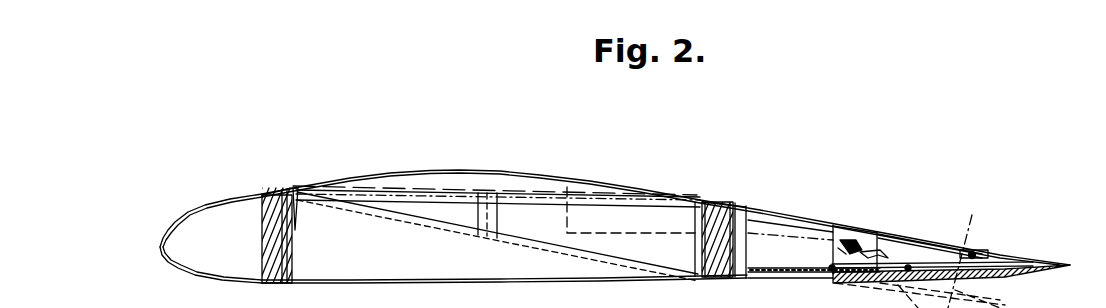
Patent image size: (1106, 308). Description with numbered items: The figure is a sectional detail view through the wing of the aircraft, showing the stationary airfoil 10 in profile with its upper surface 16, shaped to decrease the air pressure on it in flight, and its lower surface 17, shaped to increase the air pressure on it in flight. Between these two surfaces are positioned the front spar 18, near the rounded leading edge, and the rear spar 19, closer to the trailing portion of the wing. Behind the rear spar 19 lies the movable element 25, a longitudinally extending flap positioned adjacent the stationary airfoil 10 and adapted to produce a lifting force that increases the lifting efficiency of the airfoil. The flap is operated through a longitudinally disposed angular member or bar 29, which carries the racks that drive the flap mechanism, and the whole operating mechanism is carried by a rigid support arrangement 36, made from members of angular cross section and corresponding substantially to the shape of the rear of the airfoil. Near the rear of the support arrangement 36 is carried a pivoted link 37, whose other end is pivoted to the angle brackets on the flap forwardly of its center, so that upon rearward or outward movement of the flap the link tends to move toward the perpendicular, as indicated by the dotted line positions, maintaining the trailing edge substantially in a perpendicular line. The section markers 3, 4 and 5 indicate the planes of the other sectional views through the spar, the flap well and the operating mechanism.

The stationary airfoil 10 is at (215, 207).
The upper surface 16 is at (522, 173).
The lower surface 17 is at (497, 283).
The front spar 18 is at (275, 202).
The rear spar 19 is at (737, 203).
The movable element 25 is at (1032, 274).
The angular member 29 is at (888, 233).
The support arrangement 36 is at (850, 227).
The pivoted link 37 is at (968, 240).
The section line 3- 3 is at (262, 225).
The section line 4- 4 is at (747, 300).
The section line 5- 5 is at (831, 242).